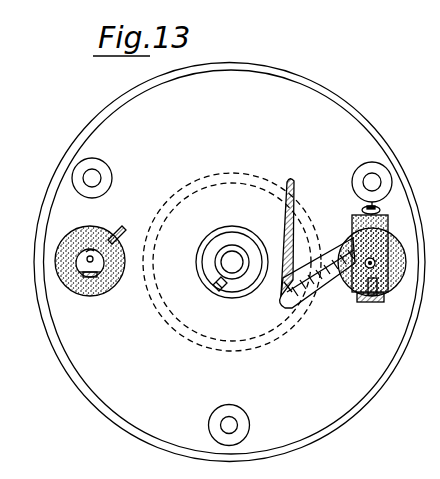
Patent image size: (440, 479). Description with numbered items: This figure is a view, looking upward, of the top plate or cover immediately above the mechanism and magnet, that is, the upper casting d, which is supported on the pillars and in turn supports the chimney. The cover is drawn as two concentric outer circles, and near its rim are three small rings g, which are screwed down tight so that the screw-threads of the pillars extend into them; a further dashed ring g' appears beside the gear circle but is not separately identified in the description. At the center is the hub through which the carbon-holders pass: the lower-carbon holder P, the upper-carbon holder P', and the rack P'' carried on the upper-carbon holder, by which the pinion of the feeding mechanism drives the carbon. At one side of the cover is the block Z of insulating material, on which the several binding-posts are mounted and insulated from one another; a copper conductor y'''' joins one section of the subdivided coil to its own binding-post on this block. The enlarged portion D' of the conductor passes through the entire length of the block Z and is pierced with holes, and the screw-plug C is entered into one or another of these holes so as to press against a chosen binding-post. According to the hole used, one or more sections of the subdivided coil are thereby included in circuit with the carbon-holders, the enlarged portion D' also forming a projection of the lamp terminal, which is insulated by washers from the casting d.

The rings g is at (232, 248).
The gear wheel rim g' is at (232, 246).
The lower-carbon holder P is at (232, 249).
The upper-carbon holder P' is at (242, 240).
The rack P'' is at (223, 300).
The upper casting d is at (317, 275).
The block of insulating material Z is at (388, 234).
The copper conductor y'''' is at (348, 205).
The screw-plug C is at (379, 296).
The enlarged portion of the conductor D' is at (358, 309).